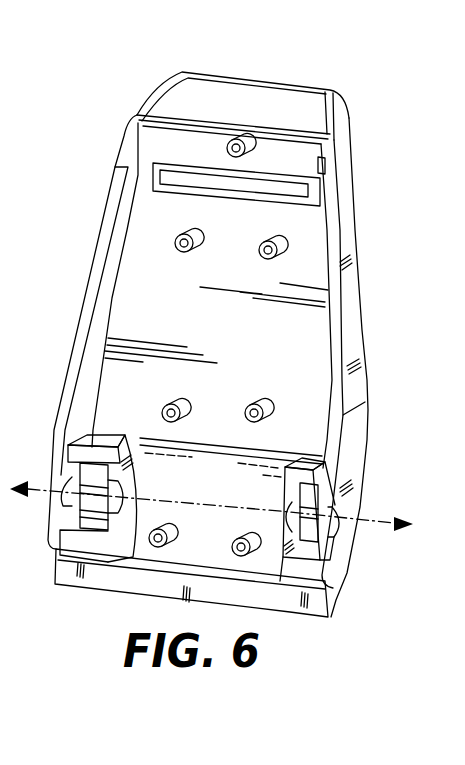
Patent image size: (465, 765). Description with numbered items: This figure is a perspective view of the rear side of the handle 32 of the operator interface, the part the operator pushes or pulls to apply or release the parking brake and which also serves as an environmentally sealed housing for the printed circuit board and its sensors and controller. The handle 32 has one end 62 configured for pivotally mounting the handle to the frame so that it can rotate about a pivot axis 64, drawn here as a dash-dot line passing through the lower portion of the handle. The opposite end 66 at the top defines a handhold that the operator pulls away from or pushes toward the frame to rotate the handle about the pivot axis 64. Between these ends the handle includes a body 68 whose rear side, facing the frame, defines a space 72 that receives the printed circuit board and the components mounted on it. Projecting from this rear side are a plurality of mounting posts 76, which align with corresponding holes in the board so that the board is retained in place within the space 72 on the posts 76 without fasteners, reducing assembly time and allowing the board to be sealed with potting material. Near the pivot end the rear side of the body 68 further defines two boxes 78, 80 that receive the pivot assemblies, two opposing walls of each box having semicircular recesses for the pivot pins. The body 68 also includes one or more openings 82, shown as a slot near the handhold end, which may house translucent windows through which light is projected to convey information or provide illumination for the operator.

The handle 32 is at (108, 121).
The opposite end 66 is at (364, 70).
The openings 82 is at (312, 190).
The mounting posts 76 is at (280, 246).
The space 72 is at (286, 293).
The body 68 is at (352, 326).
The box 78 is at (93, 467).
The box 80 is at (314, 488).
The pivot axis 64 is at (380, 525).
The one end 62 is at (382, 603).